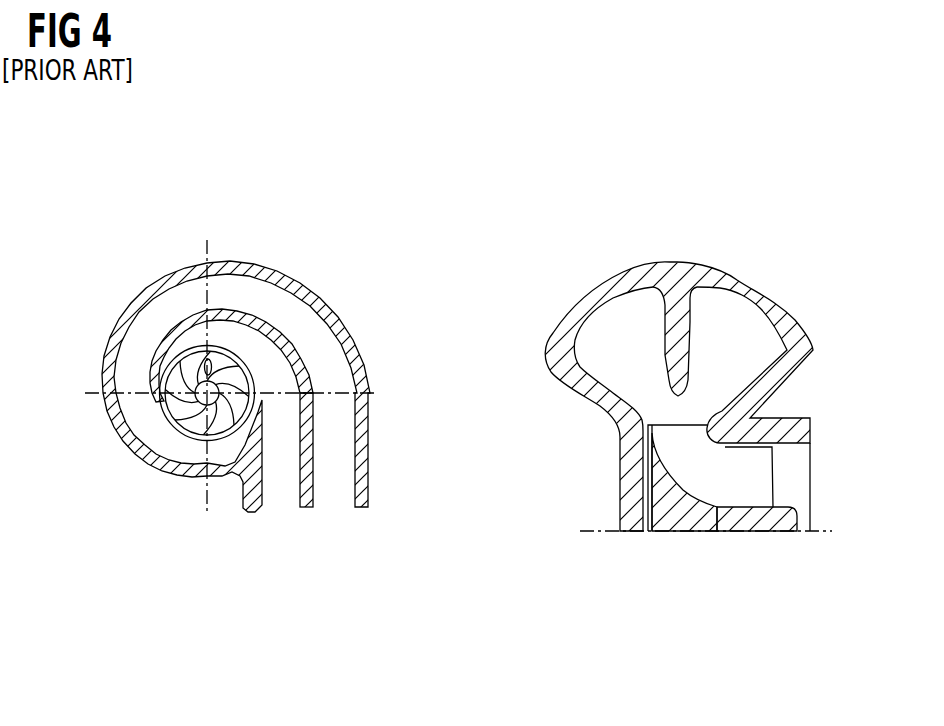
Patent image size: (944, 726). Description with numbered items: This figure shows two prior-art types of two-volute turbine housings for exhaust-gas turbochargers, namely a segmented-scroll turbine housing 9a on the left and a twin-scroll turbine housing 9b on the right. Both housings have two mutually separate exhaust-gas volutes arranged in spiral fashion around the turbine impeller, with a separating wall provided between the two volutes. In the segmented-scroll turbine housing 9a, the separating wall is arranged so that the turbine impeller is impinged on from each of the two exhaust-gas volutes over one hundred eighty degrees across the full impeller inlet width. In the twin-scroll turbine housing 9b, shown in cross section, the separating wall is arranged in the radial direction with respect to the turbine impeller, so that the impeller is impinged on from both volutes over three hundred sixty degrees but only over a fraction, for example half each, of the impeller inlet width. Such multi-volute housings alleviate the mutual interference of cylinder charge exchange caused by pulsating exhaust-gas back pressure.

The segmented-scroll turbine housing 9a is at (116, 488).
The twin-scroll turbine housing 9b is at (808, 397).